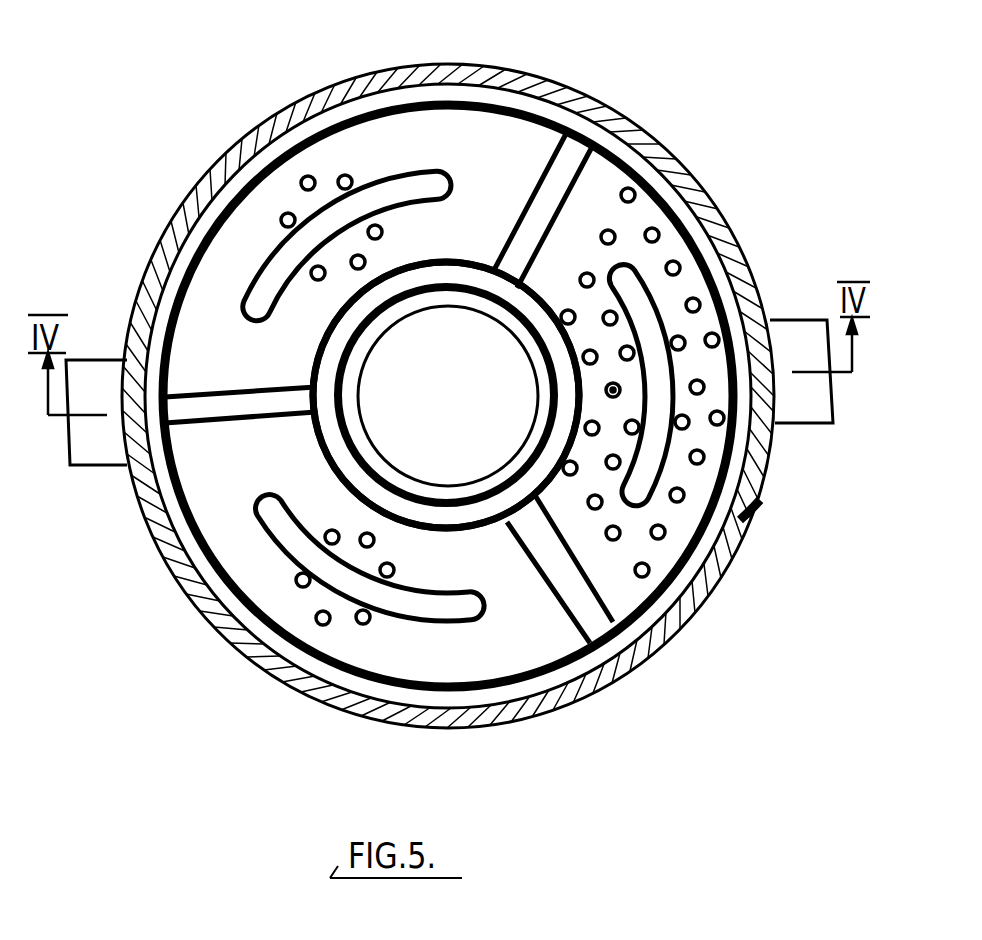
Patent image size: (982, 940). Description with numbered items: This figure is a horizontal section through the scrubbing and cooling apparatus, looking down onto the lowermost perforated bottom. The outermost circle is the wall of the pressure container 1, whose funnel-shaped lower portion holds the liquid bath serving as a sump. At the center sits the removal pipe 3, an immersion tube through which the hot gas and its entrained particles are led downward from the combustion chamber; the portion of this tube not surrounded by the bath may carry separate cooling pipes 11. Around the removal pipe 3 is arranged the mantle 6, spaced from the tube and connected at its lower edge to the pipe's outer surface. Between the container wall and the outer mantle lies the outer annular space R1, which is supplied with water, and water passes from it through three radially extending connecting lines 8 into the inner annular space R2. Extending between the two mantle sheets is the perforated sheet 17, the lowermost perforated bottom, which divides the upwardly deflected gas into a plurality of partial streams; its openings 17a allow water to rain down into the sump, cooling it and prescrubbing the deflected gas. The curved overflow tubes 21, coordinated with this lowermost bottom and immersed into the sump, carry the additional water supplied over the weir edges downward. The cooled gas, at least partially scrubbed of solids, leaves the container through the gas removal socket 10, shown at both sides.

The pressure container 1 is at (547, 80).
The removal pipe 3 is at (380, 473).
The mantle 6 is at (468, 530).
The connecting lines 8 is at (521, 207).
The gas removal socket 10 is at (107, 467).
The cooling pipes 11 is at (408, 314).
The perforated sheet 17 is at (243, 560).
The openings 17a is at (664, 540).
The overflow tubes 21 is at (408, 202).
The outer annular space R1 is at (720, 528).
The inner annular space R2 is at (330, 360).